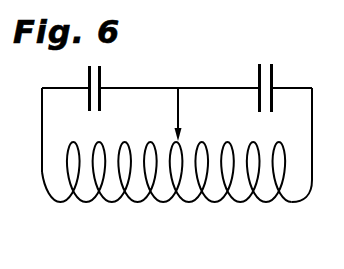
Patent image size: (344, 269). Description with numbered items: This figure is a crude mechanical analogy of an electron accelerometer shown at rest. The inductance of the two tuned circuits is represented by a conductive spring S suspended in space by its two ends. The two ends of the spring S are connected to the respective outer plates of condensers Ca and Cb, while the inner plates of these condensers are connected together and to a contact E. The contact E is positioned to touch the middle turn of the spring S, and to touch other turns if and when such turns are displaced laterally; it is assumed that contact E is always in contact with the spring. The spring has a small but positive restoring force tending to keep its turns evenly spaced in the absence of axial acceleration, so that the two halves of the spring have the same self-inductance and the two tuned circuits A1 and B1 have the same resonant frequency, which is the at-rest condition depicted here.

The condenser Ca is at (100, 76).
The condenser Cb is at (273, 76).
The tuned circuit A1 is at (112, 157).
The tuned circuit B1 is at (231, 157).
The contact E is at (180, 120).
The conductive spring S is at (167, 178).